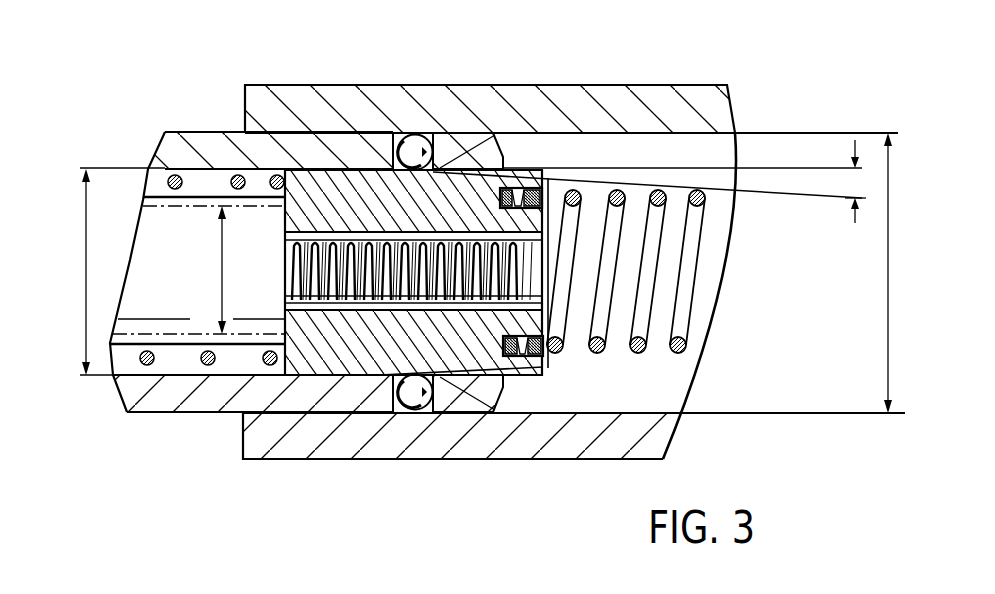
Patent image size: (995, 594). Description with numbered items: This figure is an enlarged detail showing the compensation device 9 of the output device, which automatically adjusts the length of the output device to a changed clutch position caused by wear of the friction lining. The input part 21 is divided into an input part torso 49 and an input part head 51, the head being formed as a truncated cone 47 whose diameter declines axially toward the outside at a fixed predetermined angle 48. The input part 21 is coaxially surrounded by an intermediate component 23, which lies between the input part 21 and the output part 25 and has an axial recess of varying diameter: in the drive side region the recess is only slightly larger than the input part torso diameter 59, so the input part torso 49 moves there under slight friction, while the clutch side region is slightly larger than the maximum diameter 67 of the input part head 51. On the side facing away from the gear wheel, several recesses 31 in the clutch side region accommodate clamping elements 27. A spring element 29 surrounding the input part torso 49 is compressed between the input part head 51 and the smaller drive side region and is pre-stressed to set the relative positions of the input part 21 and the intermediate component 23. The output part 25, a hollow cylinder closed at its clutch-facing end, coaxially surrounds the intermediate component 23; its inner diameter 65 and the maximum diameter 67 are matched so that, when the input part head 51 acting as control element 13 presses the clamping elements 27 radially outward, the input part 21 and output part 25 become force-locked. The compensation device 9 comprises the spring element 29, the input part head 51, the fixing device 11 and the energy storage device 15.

The compensation device 9 is at (540, 81).
The fixing device 11 is at (431, 420).
The control element 13 is at (457, 188).
The energy storage device 15 is at (655, 238).
The input part 21 is at (157, 307).
The intermediate component 23 is at (222, 390).
The output part 25 is at (347, 430).
The clamping elements 27 is at (436, 406).
The spring element 29 is at (235, 178).
The recesses 31 is at (458, 192).
The truncated cone 47 is at (347, 190).
The angle 48 is at (857, 198).
The input part torso 49 is at (188, 327).
The input part head 51 is at (392, 380).
The input part torso diameter 59 is at (218, 243).
The inner diameter 65 is at (888, 297).
The maximum diameter 67 is at (86, 266).